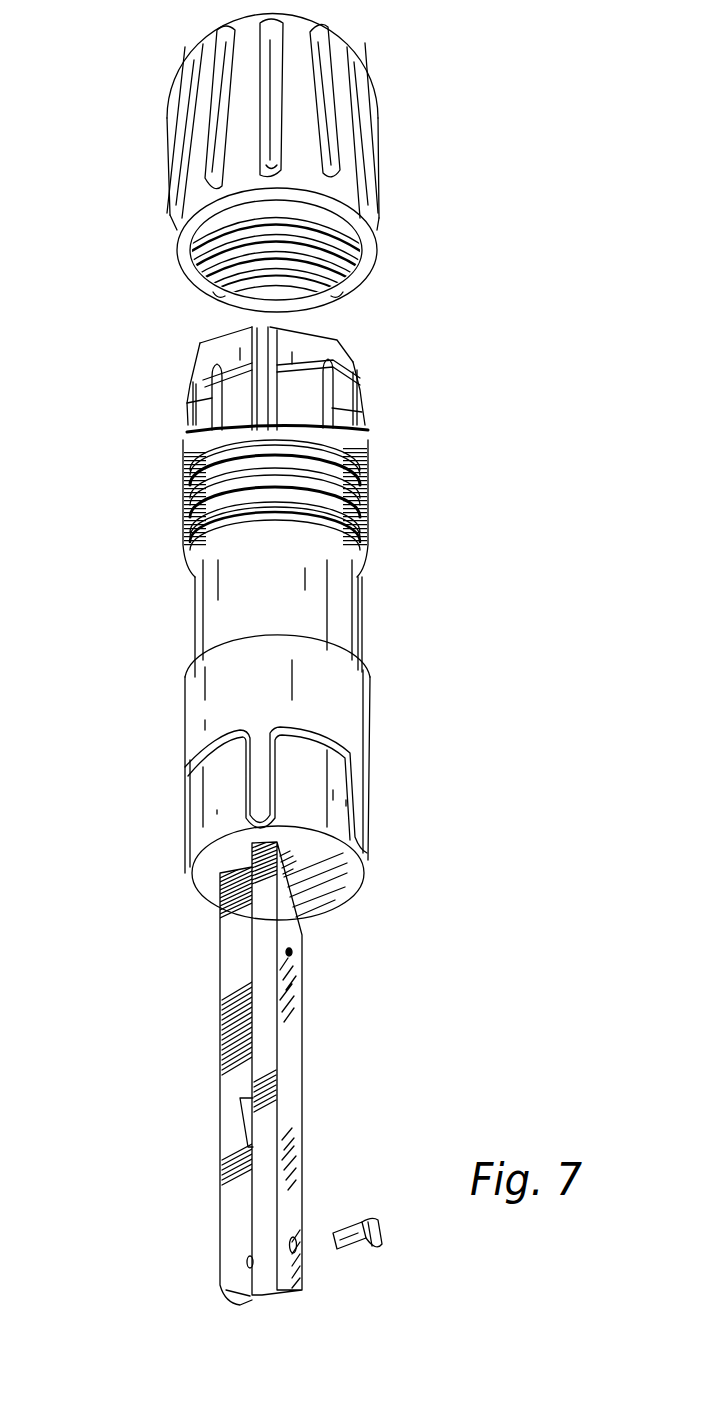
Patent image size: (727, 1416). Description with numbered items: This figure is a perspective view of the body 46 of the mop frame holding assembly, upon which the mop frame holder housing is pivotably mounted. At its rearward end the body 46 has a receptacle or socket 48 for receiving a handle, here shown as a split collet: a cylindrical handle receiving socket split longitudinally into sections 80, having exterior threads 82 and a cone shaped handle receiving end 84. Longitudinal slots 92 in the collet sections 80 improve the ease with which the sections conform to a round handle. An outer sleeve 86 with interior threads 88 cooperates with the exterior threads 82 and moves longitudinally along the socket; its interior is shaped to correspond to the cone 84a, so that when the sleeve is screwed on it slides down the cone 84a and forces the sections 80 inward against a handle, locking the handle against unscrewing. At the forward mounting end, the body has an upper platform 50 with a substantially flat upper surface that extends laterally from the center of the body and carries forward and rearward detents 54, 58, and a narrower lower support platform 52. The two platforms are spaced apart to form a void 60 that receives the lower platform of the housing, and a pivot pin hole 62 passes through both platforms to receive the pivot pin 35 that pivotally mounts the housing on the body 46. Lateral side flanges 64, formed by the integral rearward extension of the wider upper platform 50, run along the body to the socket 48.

The outer sleeve 86 is at (352, 138).
The interior threads 88 is at (218, 280).
The cone shaped handle receiving end 84 is at (280, 431).
The cone 84a is at (222, 355).
The sections 80 is at (196, 402).
The longitudinal slots 92 is at (195, 434).
The exterior threads 82 is at (365, 470).
The body 46 is at (562, 532).
The socket 48 is at (302, 618).
The upper platform 50 is at (286, 1104).
The forward detent 54 is at (302, 1063).
The rearward detent 58 is at (300, 940).
The lower support platform 52 is at (230, 1215).
The lateral side flanges 64 is at (262, 978).
The void 60 is at (245, 1150).
The pivot pin hole 62 is at (245, 1250).
The pivot pin 35 is at (380, 1228).